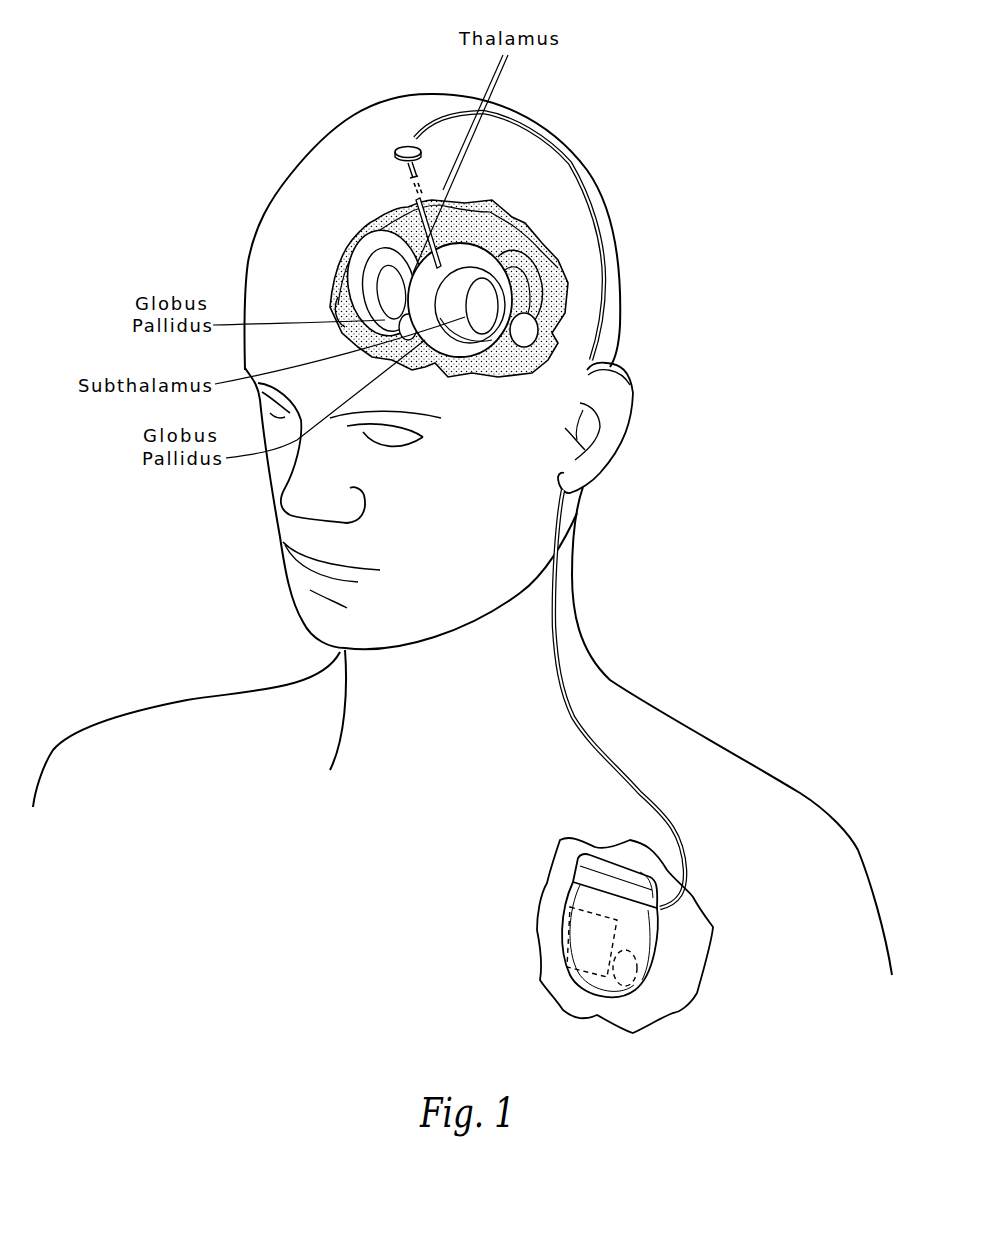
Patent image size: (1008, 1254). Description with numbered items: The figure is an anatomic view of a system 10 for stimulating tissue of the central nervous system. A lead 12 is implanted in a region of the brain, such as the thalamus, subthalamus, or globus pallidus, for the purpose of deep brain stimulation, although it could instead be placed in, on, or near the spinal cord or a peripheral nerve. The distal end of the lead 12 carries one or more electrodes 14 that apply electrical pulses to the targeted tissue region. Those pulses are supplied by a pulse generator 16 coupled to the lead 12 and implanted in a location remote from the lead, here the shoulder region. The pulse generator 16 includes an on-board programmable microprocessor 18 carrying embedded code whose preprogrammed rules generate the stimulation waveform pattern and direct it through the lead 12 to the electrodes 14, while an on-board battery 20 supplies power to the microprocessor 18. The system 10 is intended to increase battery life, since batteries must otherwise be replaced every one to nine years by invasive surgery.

The system 10 is at (143, 152).
The lead 12 is at (403, 148).
The electrodes 14 is at (435, 275).
The pulse generator 16 is at (580, 890).
The programmable microprocessor 18 is at (575, 933).
The battery 20 is at (625, 990).